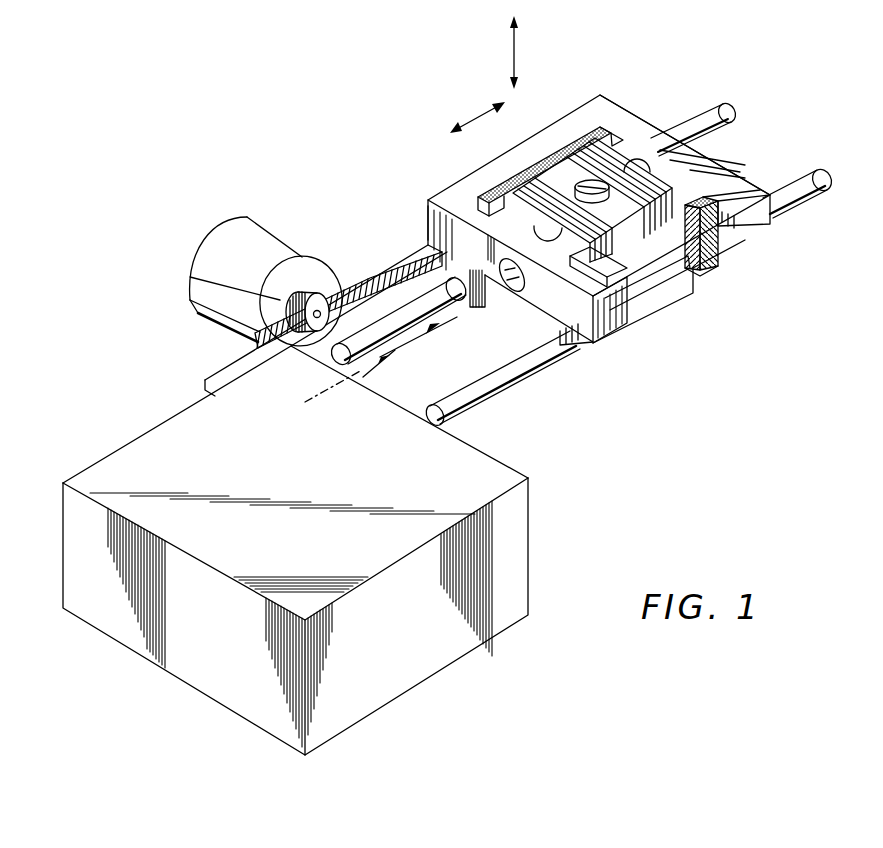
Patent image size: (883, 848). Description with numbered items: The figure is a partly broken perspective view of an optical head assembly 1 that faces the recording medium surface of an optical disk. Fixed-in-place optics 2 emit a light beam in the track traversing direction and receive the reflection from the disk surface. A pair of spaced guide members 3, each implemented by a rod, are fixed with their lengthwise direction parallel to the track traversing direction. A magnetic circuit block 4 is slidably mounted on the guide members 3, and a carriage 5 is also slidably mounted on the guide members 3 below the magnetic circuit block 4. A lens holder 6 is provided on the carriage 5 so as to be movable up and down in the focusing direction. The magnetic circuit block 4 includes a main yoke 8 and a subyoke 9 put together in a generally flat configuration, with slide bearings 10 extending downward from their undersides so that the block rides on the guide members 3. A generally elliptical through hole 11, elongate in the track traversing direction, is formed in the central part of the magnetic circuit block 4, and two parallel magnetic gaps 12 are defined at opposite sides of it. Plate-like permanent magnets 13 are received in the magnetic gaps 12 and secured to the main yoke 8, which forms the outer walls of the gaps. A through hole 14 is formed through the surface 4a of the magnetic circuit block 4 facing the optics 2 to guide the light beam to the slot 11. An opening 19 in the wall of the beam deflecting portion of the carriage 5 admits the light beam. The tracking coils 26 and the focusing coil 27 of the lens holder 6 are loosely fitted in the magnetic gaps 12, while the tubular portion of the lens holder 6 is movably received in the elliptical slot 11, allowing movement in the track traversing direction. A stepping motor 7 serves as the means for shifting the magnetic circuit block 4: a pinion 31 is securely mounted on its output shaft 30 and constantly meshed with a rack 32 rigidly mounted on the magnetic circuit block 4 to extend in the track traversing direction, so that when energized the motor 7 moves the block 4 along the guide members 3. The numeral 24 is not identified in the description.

The optical head assembly 1 is at (245, 164).
The optics 2 is at (515, 541).
The guide members 3 is at (736, 122).
The magnetic circuit block 4 is at (424, 195).
The surface of the magnetic circuit block 4a is at (426, 220).
The carriage 5 is at (638, 276).
The lens holder 6 is at (565, 182).
The stepping motor 7 is at (222, 251).
The main yoke 8 is at (507, 167).
The subyoke 9 is at (706, 168).
The slide bearings 10 is at (474, 283).
The through hole 11 is at (620, 176).
The magnetic gaps 12 is at (496, 203).
The permanent magnets 13 is at (597, 186).
The through hole 14 is at (517, 284).
The opening 19 is at (660, 286).
The shaft 24 is at (648, 165).
The tracking coils 26 is at (698, 265).
The focusing coil 27 is at (749, 179).
The output shaft 30 is at (315, 292).
The pinion 31 is at (212, 319).
The rack 32 is at (347, 287).